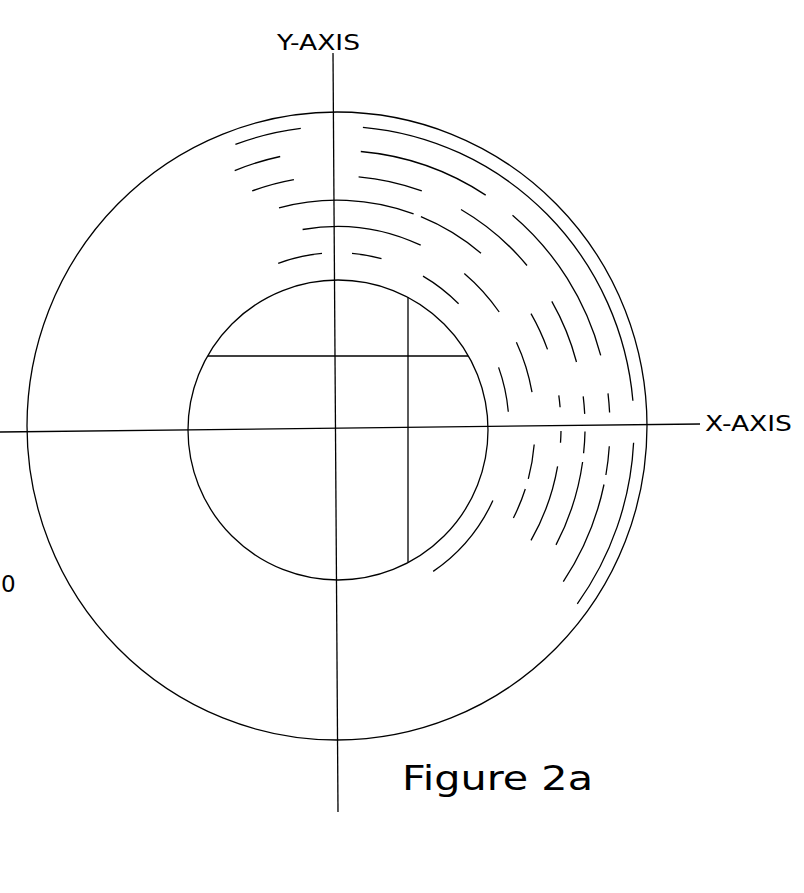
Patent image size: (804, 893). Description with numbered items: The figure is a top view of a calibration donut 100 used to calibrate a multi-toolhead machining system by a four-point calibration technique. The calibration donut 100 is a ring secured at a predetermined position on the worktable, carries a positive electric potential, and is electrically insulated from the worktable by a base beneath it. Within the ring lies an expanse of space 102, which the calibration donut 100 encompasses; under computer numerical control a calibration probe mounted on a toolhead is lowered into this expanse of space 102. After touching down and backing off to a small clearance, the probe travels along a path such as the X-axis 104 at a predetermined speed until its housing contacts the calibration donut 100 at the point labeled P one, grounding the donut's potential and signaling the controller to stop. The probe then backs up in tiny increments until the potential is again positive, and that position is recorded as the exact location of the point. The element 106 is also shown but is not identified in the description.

The calibration donut 100 is at (443, 210).
The expanse of space 102 is at (283, 322).
The X-axis 104 is at (432, 337).
The vertical chord P3-P4 106 is at (427, 488).